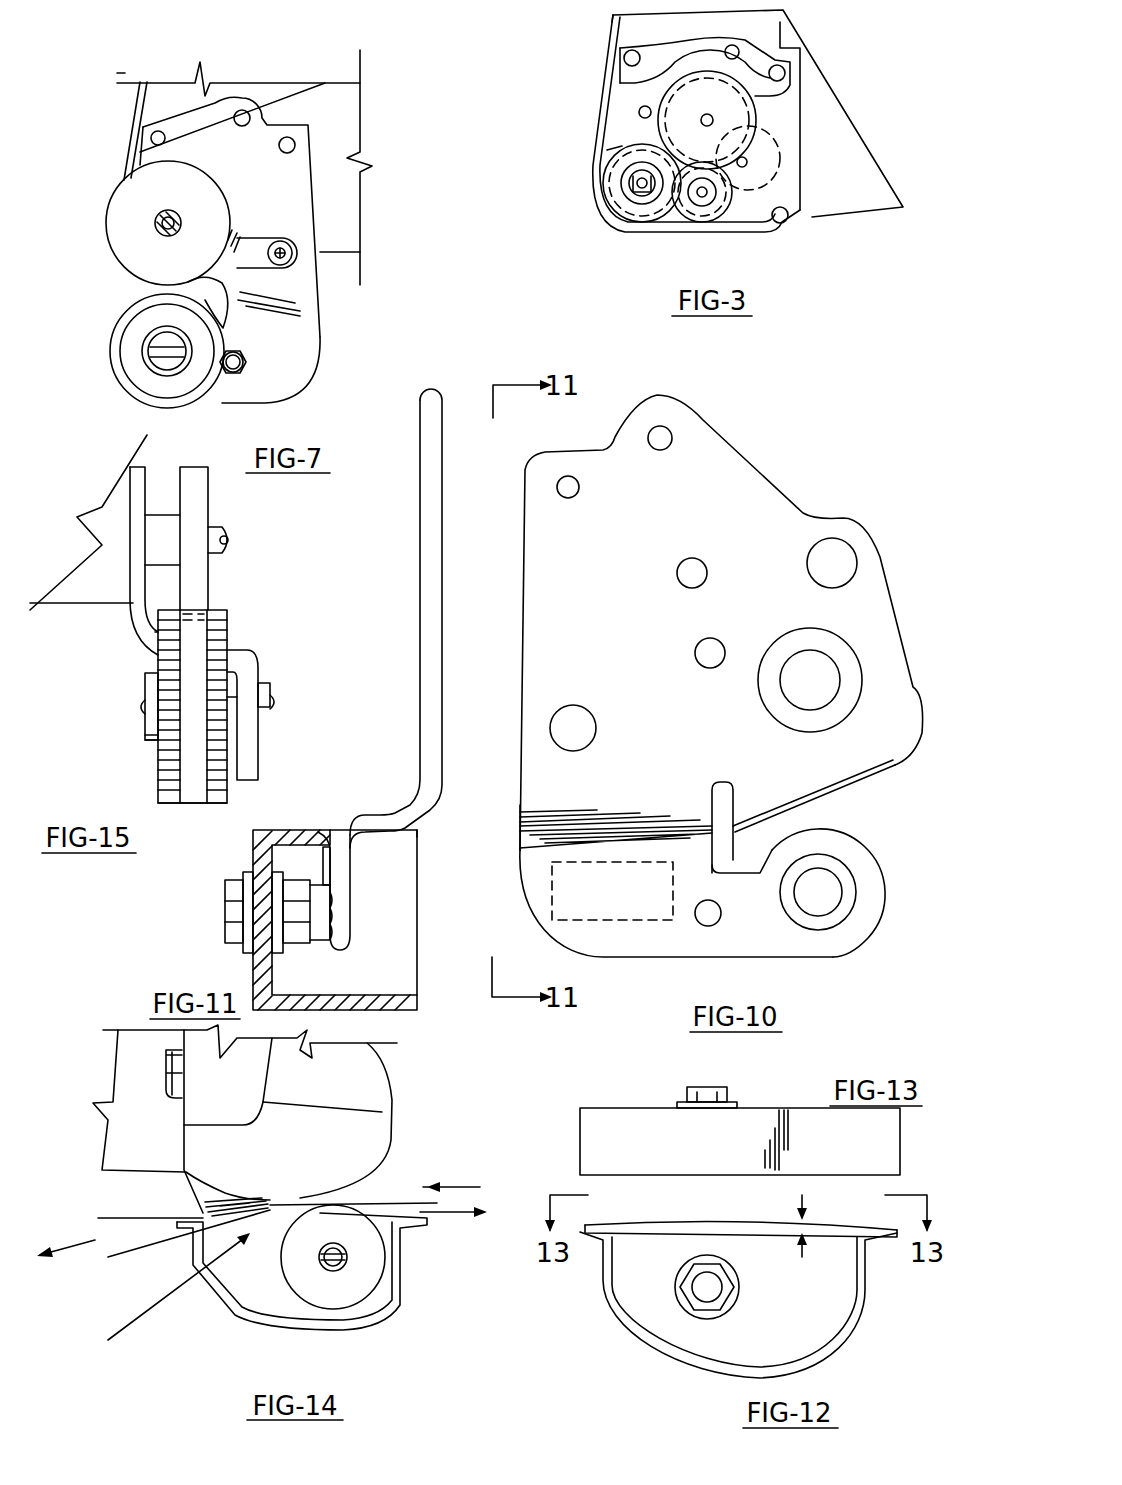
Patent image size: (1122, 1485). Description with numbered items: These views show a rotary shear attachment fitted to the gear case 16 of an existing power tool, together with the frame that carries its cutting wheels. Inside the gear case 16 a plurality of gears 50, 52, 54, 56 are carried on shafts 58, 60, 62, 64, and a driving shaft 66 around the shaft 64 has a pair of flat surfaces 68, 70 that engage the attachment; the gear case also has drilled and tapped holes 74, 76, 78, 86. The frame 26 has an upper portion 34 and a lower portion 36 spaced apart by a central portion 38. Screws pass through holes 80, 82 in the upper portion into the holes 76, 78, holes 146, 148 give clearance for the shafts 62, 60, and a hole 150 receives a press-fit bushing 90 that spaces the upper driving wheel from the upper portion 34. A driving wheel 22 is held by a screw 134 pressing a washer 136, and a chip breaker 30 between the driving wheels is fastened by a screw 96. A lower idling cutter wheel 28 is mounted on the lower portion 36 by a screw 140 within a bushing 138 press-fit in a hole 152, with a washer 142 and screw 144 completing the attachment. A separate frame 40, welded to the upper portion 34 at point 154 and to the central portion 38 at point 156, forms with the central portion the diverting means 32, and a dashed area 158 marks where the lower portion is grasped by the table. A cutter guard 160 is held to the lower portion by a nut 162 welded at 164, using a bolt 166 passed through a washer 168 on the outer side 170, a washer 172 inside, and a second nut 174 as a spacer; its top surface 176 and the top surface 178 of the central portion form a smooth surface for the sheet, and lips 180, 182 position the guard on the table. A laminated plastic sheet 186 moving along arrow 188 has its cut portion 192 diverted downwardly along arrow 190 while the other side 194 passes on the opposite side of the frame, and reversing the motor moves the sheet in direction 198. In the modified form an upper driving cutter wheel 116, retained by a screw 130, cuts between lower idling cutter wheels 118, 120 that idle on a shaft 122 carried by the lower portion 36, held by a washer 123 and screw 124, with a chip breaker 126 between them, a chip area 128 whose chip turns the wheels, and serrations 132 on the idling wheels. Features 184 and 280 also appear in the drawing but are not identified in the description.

In FIG. 3, the gear case 16 is at (780, 22).
In FIG. 7, the driving wheel 22 is at (118, 226).
In FIG. 7, the frame 26 is at (322, 312).
In FIG. 10, the frame 26 is at (765, 480).
In FIG. 15, the frame 26 is at (248, 653).
In FIG. 14, the frame 26 is at (228, 1180).
In FIG. 7, the lower idling cutter wheel 28 is at (118, 335).
In FIG. 14, the lower idling cutter wheel 28 is at (380, 1258).
In FIG. 7, the chip breaker 30 is at (240, 236).
In FIG. 14, the diverting means 32 is at (165, 1305).
In FIG. 7, the upper portion 34 is at (256, 176).
In FIG. 10, the upper portion 34 is at (580, 576).
In FIG. 15, the upper portion 34 is at (133, 480).
In FIG. 11, the upper portion 34 is at (427, 490).
In FIG. 7, the lower portion 36 is at (257, 388).
In FIG. 10, the lower portion 36 is at (750, 933).
In FIG. 15, the lower portion 36 is at (272, 712).
In FIG. 11, the lower portion 36 is at (345, 933).
In FIG. 14, the lower portion 36 is at (240, 1278).
In FIG. 10, the central portion 38 is at (528, 808).
In FIG. 11, the central portion 38 is at (422, 812).
In FIG. 10, the separate frame 40 is at (842, 790).
In FIG. 14, the separate frame 40 is at (310, 1190).
In FIG. 3, the gear 50 is at (785, 165).
In FIG. 3, the gear 52 is at (708, 222).
In FIG. 3, the gear 54 is at (624, 60).
In FIG. 3, the gear 56 is at (607, 150).
In FIG. 3, the shaft 58 is at (745, 160).
In FIG. 3, the shaft 60 is at (705, 192).
In FIG. 3, the shaft 62 is at (712, 118).
In FIG. 3, the shaft 64 is at (640, 185).
In FIG. 3, the shaft 66 is at (643, 190).
In FIG. 15, the shaft 66 is at (226, 556).
In FIG. 3, the flat surface 68 is at (660, 195).
In FIG. 3, the flat surface 70 is at (650, 158).
In FIG. 3, the drilled and tapped hole 74 is at (640, 114).
In FIG. 3, the drilled and tapped hole 76 is at (617, 18).
In FIG. 3, the drilled and tapped hole 78 is at (786, 74).
In FIG. 7, the hole 80 is at (245, 110).
In FIG. 10, the hole 80 is at (672, 434).
In FIG. 7, the hole 82 is at (291, 137).
In FIG. 10, the hole 82 is at (565, 478).
In FIG. 3, the drilled and tapped hole 86 is at (782, 224).
In FIG. 10, the bushing 90 is at (846, 665).
In FIG. 15, the bushing 90 is at (165, 510).
In FIG. 7, the screw 96 is at (294, 252).
In FIG. 15, the upper driving cutter wheel 116 is at (197, 515).
In FIG. 15, the lower idling cutter wheel 118 is at (158, 742).
In FIG. 15, the lower idling cutter wheel 120 is at (203, 800).
In FIG. 15, the shaft 122 is at (272, 700).
In FIG. 15, the washer 123 is at (155, 732).
In FIG. 15, the screw 124 is at (138, 707).
In FIG. 15, the chip breaker 126 is at (197, 682).
In FIG. 15, the chip area 128 is at (208, 610).
In FIG. 15, the screw 130 is at (240, 533).
In FIG. 15, the serrations 132 is at (160, 653).
In FIG. 7, the screw 134 is at (157, 214).
In FIG. 7, the washer 136 is at (167, 237).
In FIG. 10, the bushing 138 is at (847, 880).
In FIG. 7, the screw 140 is at (168, 360).
In FIG. 14, the washer 142 is at (330, 1272).
In FIG. 14, the screw 144 is at (322, 1270).
In FIG. 10, the hole 146 is at (703, 562).
In FIG. 10, the hole 148 is at (700, 652).
In FIG. 10, the hole 150 is at (832, 630).
In FIG. 10, the hole 152 is at (858, 917).
In FIG. 10, the point 154 is at (893, 766).
In FIG. 10, the point 156 is at (733, 837).
In FIG. 10, the dashed area 158 is at (650, 920).
In FIG. 11, the cutter guard 160 is at (252, 868).
In FIG. 14, the cutter guard 160 is at (382, 1288).
In FIG. 13, the cutter guard 160 is at (580, 1125).
In FIG. 12, the cutter guard 160 is at (852, 1338).
In FIG. 7, the nut 162 is at (236, 376).
In FIG. 11, the nut 162 is at (332, 893).
In FIG. 11, the weld 164 is at (337, 837).
In FIG. 11, the bolt 166 is at (240, 907).
In FIG. 13, the bolt 166 is at (712, 1100).
In FIG. 11, the washer 168 is at (243, 877).
In FIG. 13, the washer 168 is at (735, 1104).
In FIG. 11, the outer side 170 is at (250, 983).
In FIG. 13, the outer side 170 is at (620, 1108).
In FIG. 11, the washer 172 is at (279, 878).
In FIG. 12, the washer 172 is at (712, 1318).
In FIG. 11, the second nut 174 is at (307, 872).
In FIG. 12, the second nut 174 is at (683, 1297).
In FIG. 11, the top surface 176 is at (255, 832).
In FIG. 13, the top surface 176 is at (663, 1155).
In FIG. 12, the top surface 176 is at (630, 1226).
In FIG. 11, the top surface 178 is at (408, 790).
In FIG. 12, the lip 180 is at (588, 1240).
In FIG. 12, the lip 182 is at (878, 1240).
In FIG. 10, the belt 184 is at (633, 843).
In FIG. 11, the belt 184 is at (403, 843).
In FIG. 14, the belt 184 is at (267, 1210).
In FIG. 14, the laminated plastic sheet 186 is at (418, 1186).
In FIG. 14, the arrow 188 is at (484, 1184).
In FIG. 14, the arrow 190 is at (60, 1250).
In FIG. 14, the cut portion 192 is at (138, 1260).
In FIG. 14, the other side of sheet material 194 is at (131, 1212).
In FIG. 14, the reversed direction 198 is at (462, 1214).
In FIG. 12, the dimension arrow 280 is at (812, 1200).